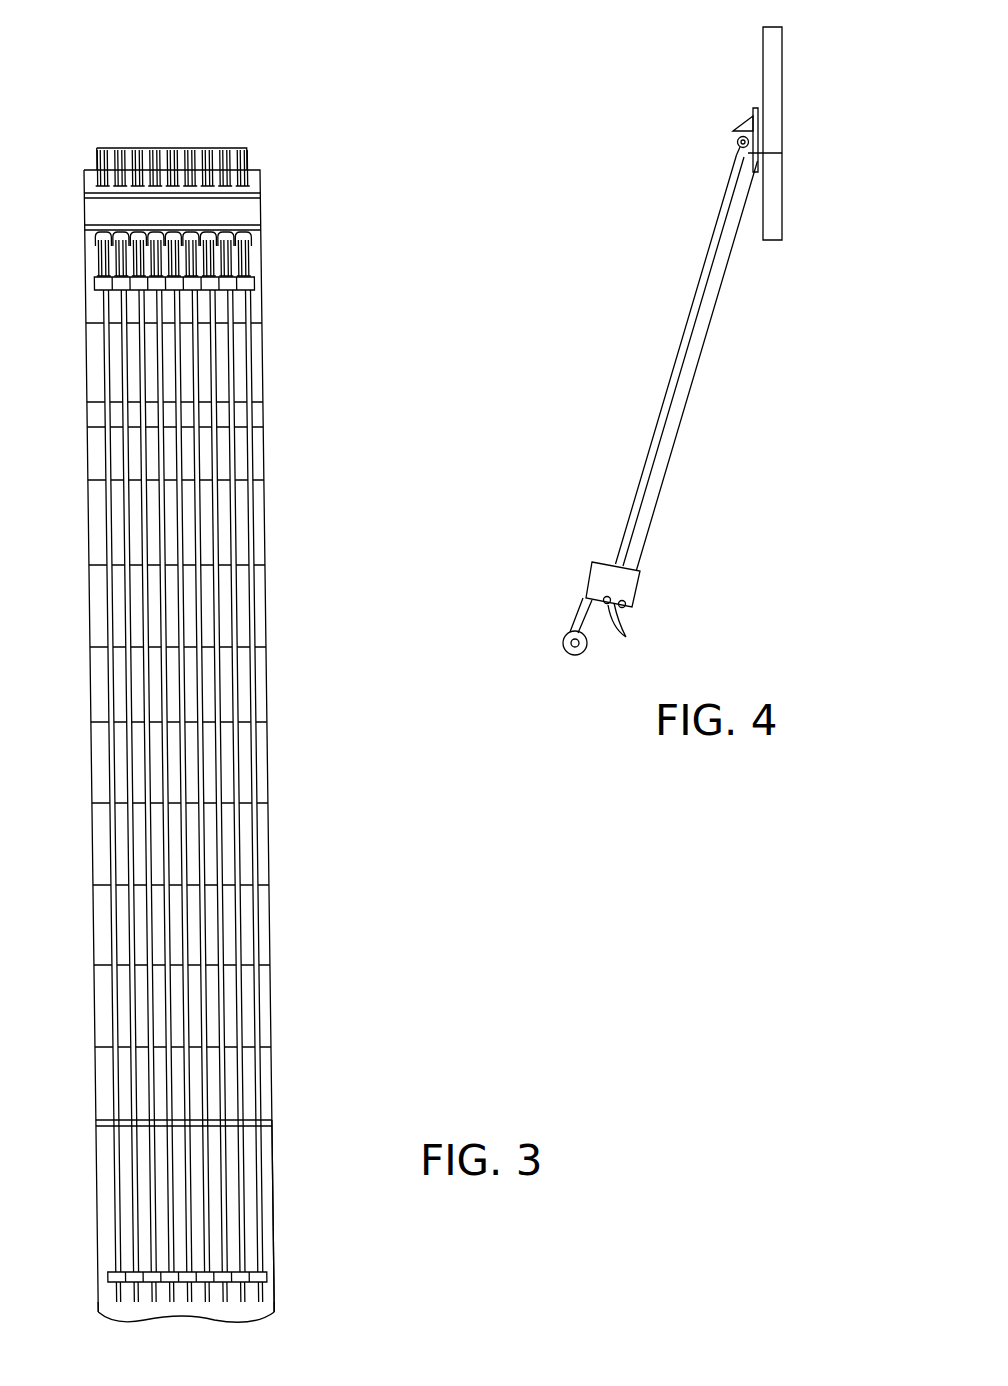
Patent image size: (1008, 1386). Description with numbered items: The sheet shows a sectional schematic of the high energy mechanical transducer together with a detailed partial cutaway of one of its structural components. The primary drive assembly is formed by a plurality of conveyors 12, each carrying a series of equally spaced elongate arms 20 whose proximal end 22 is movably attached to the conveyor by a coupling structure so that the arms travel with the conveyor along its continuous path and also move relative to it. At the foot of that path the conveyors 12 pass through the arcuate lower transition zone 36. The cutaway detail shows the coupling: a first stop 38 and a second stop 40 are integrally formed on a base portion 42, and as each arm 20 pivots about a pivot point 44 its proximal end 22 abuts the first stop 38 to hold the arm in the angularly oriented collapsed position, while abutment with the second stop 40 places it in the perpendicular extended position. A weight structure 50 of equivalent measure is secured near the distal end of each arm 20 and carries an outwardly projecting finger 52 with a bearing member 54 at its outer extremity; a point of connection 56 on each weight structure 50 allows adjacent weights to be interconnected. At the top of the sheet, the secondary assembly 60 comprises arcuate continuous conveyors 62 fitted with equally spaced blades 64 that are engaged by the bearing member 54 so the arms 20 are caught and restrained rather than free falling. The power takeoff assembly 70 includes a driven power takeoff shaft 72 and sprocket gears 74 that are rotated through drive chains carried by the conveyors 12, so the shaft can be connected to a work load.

In FIG. 3, the conveyor 12 is at (140, 527).
In FIG. 4, the conveyor 12 is at (780, 50).
In FIG. 3, the elongate arm 20 is at (140, 360).
In FIG. 4, the elongate arm 20 is at (668, 400).
In FIG. 4, the proximal end 22 is at (735, 142).
In FIG. 3, the lower transition zone 36 is at (284, 1117).
In FIG. 4, the first stop 38 is at (765, 153).
In FIG. 4, the second stop 40 is at (745, 122).
In FIG. 4, the base portion 42 is at (754, 110).
In FIG. 4, the pivot point 44 is at (735, 152).
In FIG. 3, the weight structure 50 is at (255, 282).
In FIG. 4, the weight structure 50 is at (592, 572).
In FIG. 3, the finger 52 is at (262, 1290).
In FIG. 4, the finger 52 is at (577, 620).
In FIG. 3, the bearing member 54 is at (262, 1302).
In FIG. 4, the bearing member 54 is at (563, 645).
In FIG. 4, the point of connection 56 is at (630, 631).
In FIG. 3, the secondary assembly 60 is at (233, 128).
In FIG. 3, the secondary conveyor 62 is at (271, 207).
In FIG. 3, the blade 64 is at (150, 148).
In FIG. 3, the power takeoff assembly 70 is at (281, 1138).
In FIG. 3, the power takeoff shaft 72 is at (100, 1122).
In FIG. 3, the sprocket gear 74 is at (248, 1115).